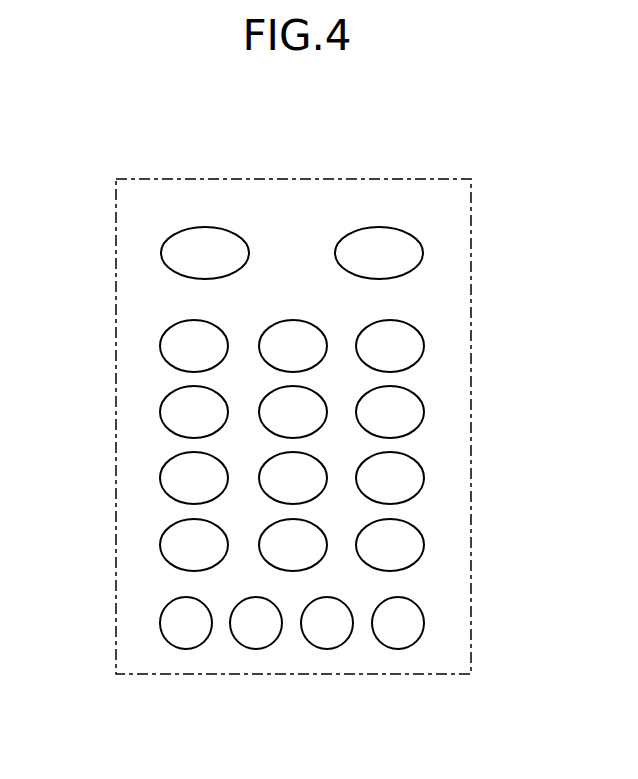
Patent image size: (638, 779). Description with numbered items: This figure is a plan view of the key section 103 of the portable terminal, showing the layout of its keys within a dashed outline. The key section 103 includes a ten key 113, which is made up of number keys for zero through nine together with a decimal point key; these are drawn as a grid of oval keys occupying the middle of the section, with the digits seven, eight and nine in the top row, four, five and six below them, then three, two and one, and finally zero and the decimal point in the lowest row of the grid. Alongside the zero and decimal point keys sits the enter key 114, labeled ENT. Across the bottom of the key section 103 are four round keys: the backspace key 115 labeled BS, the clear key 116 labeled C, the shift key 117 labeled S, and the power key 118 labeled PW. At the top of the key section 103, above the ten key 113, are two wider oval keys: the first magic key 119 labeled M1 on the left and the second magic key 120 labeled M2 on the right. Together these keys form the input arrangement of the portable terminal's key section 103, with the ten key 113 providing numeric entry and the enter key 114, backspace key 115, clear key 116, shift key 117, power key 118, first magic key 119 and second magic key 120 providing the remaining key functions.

The key section 103 is at (427, 178).
The ten key 113 is at (147, 432).
The enter key 114 is at (424, 544).
The backspace key 115 is at (186, 649).
The clear key 116 is at (256, 649).
The shift key 117 is at (327, 649).
The power key 118 is at (398, 649).
The first magic key 119 is at (161, 253).
The second magic key 120 is at (423, 253).